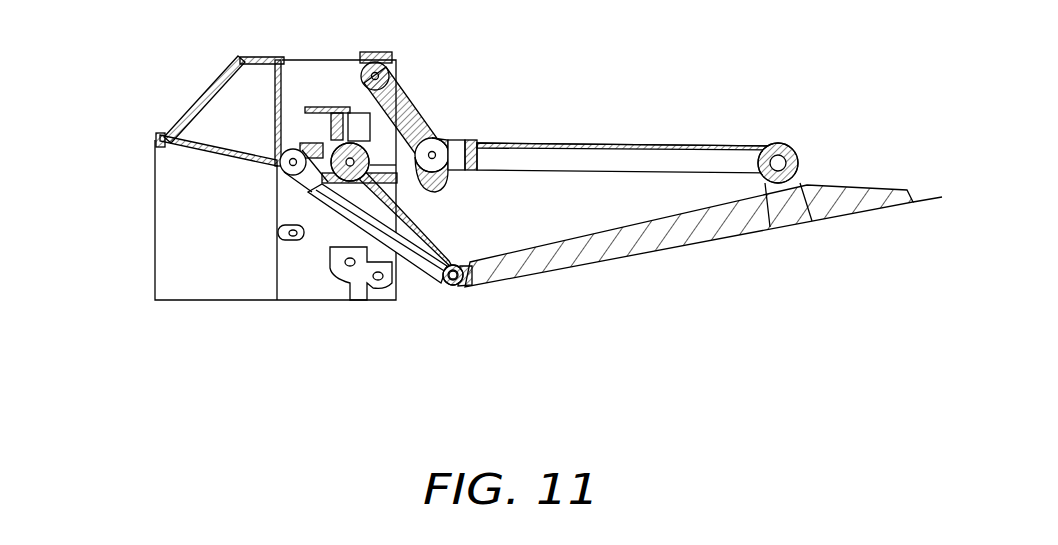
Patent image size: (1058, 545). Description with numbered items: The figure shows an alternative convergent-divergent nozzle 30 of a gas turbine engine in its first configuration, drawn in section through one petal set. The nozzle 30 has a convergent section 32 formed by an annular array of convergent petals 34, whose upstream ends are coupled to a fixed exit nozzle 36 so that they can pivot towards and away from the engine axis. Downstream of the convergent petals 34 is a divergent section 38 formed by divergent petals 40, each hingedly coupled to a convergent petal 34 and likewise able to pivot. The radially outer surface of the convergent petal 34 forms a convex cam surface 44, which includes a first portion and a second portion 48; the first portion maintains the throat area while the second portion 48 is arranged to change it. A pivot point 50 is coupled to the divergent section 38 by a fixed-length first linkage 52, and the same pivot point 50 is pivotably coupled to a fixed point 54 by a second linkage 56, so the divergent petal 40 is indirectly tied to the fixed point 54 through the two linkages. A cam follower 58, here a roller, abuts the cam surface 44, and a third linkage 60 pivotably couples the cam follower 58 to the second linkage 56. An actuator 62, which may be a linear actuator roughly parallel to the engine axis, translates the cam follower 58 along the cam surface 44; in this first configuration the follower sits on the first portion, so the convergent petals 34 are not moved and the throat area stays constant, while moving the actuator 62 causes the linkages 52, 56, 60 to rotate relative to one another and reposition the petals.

The nozzle 30 is at (162, 28).
The convergent section 32 is at (300, 310).
The convergent petals 34 is at (442, 268).
The fixed exit nozzle 36 is at (250, 133).
The divergent section 38 is at (633, 278).
The divergent petals 40 is at (736, 222).
The cam surface 44 is at (430, 243).
The second portion 48 is at (420, 212).
The pivot point 50 is at (445, 145).
The first linkage 52 is at (626, 156).
The fixed point 54 is at (363, 62).
The second linkage 56 is at (403, 97).
The cam follower 58 is at (343, 140).
The third linkage 60 is at (440, 190).
The actuator 62 is at (318, 138).